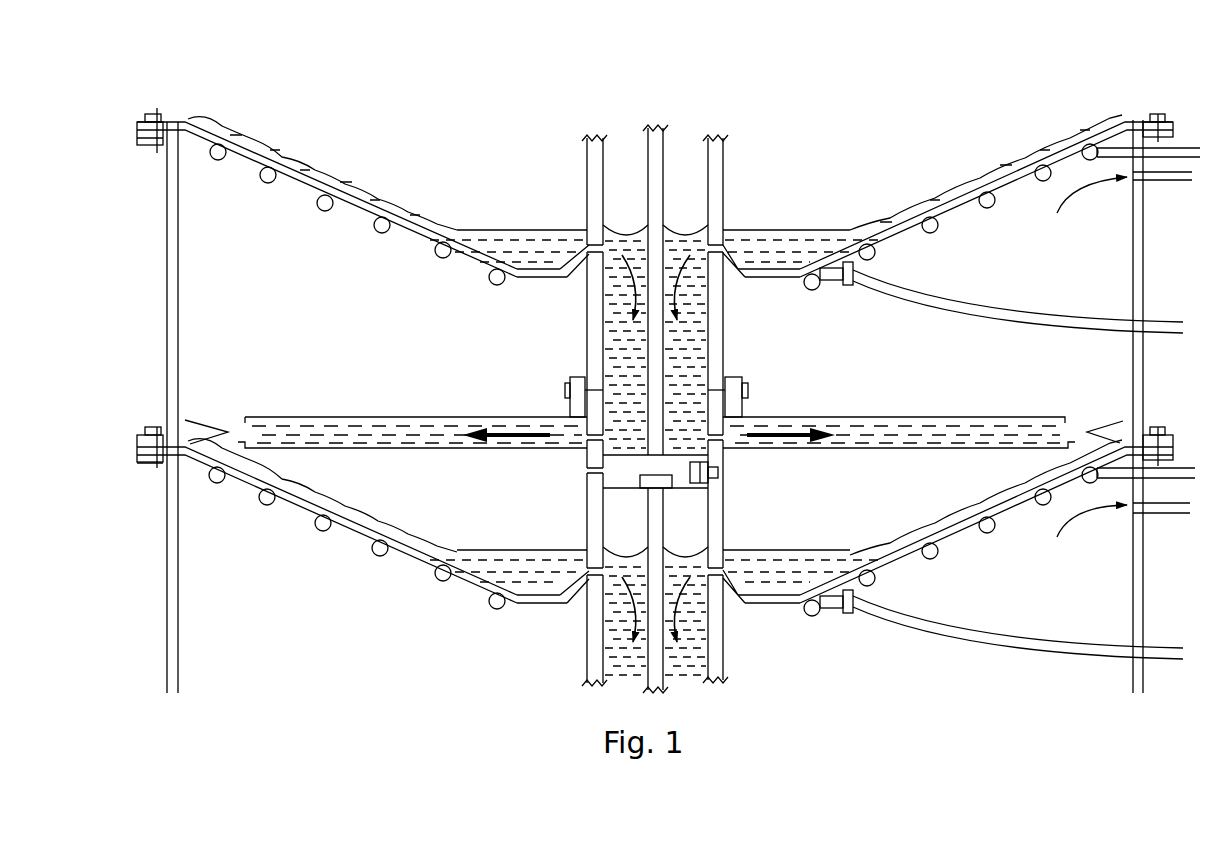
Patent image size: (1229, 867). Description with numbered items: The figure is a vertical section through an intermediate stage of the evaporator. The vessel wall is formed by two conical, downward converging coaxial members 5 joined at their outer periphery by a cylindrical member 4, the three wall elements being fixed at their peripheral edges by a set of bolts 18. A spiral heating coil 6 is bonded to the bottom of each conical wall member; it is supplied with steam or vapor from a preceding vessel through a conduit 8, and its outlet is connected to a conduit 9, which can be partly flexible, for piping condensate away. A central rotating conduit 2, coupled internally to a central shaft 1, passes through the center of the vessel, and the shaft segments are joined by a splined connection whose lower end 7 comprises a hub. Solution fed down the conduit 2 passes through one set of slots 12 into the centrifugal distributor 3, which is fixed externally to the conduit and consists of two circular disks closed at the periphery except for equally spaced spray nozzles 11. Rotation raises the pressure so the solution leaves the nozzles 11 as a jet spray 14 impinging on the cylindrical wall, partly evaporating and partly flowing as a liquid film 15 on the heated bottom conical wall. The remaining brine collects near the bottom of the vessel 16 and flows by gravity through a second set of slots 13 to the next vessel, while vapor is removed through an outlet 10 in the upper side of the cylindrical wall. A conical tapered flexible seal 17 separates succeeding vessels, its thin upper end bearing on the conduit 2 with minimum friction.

The central shaft 1 is at (667, 148).
The central rotating conduit 2 is at (727, 168).
The centrifugal distributor 3 is at (884, 413).
The cylindrical member 4 is at (163, 218).
The conical downward converging coaxial members 5 is at (953, 196).
The spiral heating coil 6 is at (1037, 186).
The lower end of shaft segment 7 is at (620, 475).
The conduit 8 is at (1118, 160).
The conduit 9 is at (950, 318).
The outlet 10 is at (1130, 184).
The spray nozzles 11 is at (240, 421).
The slots 12 is at (582, 434).
The slots 13 is at (584, 244).
The jet spray 14 is at (193, 414).
The liquid film 15 is at (1029, 144).
The bottom of the vessel 16 is at (781, 579).
The conical tapered flexible seal 17 is at (575, 281).
The bolts 18 is at (157, 113).